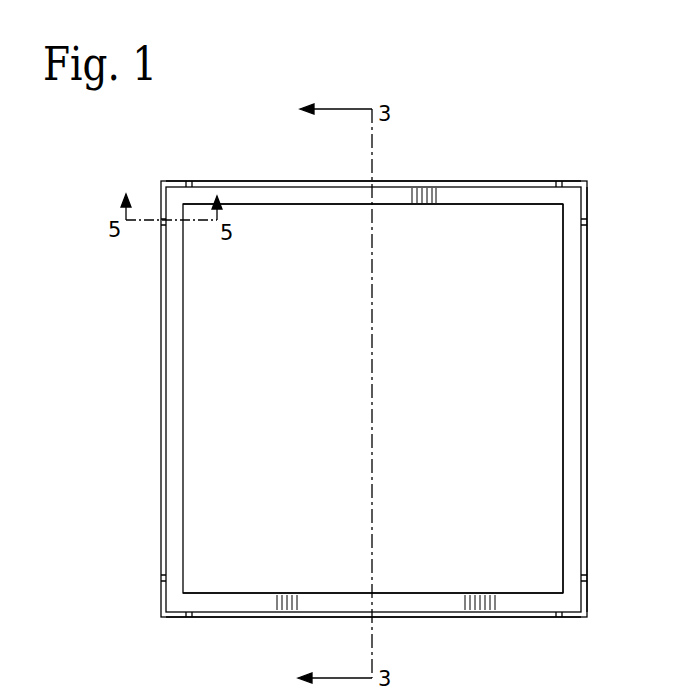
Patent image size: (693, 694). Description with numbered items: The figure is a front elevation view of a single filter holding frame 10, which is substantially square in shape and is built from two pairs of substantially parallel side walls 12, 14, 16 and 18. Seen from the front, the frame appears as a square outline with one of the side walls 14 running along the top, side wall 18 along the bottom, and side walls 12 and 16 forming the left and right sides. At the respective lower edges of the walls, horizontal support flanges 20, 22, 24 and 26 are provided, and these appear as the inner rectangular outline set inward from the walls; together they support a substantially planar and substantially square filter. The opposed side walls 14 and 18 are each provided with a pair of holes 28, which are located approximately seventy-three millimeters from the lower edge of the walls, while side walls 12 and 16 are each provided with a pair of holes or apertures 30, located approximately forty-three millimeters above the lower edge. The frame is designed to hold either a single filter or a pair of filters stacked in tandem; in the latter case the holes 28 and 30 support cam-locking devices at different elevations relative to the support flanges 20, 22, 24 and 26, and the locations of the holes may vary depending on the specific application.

The filter holding frame 10 is at (503, 130).
The side wall 12 is at (163, 315).
The side wall 14 is at (300, 182).
The side wall 16 is at (588, 356).
The side wall 18 is at (298, 618).
The horizontal support flange 20 is at (178, 329).
The horizontal support flange 22 is at (246, 204).
The horizontal support flange 24 is at (567, 261).
The horizontal support flange 26 is at (450, 598).
The holes 28 is at (191, 182).
The holes or apertures 30 is at (163, 222).